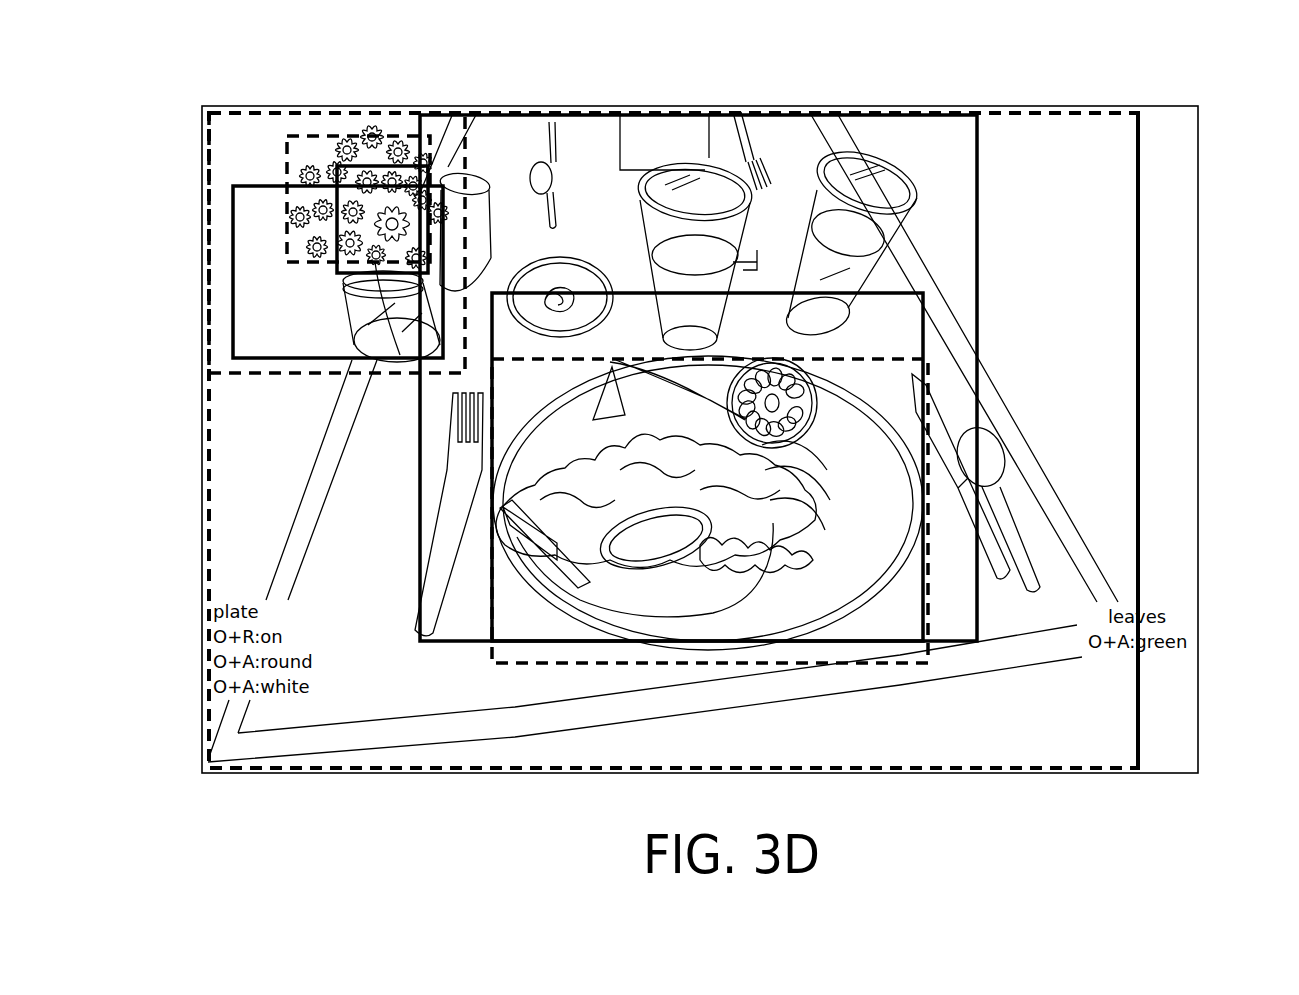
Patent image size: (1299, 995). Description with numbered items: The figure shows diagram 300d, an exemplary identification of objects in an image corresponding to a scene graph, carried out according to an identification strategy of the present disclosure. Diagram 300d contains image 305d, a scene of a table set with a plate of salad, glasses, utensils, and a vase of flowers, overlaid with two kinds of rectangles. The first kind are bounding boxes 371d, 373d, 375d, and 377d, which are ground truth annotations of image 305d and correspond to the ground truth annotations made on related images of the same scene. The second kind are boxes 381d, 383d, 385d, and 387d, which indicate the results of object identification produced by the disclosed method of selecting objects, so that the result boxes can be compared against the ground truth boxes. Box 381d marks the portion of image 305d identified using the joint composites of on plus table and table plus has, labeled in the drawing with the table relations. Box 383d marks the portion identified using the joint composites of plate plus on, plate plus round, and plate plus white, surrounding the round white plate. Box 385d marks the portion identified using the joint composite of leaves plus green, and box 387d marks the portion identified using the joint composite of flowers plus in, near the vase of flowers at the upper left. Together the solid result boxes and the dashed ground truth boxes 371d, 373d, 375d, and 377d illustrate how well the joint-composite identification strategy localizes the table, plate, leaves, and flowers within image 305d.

The diagram 300d is at (1192, 78).
The image 305d is at (203, 106).
The bounding box 371d is at (1137, 220).
The bounding box 375d is at (262, 374).
The bounding box 377d is at (287, 149).
The box 387d is at (233, 314).
The box 385d is at (373, 360).
The box 381d is at (948, 288).
The box 383d is at (897, 349).
The bounding box 373d is at (825, 665).